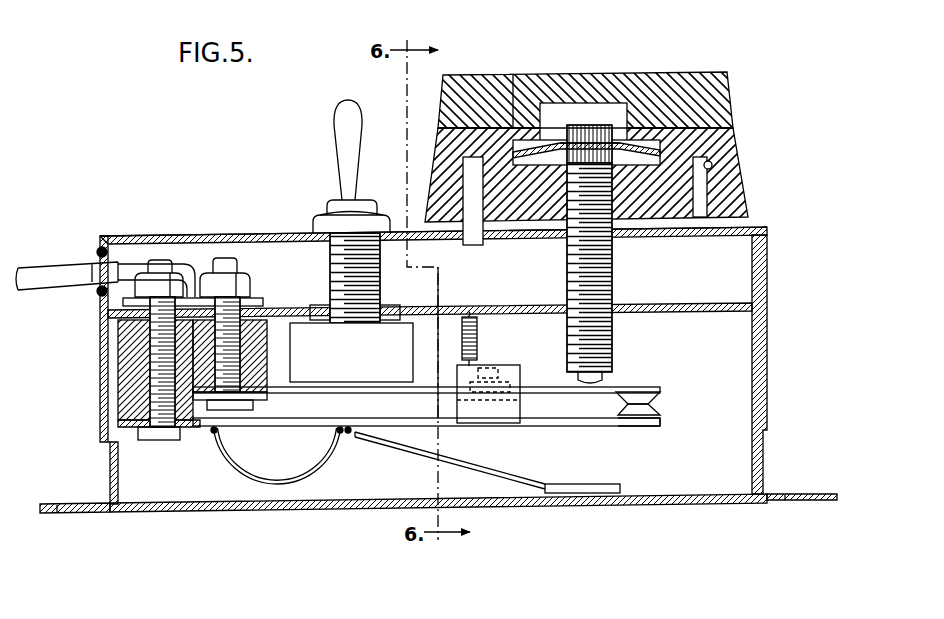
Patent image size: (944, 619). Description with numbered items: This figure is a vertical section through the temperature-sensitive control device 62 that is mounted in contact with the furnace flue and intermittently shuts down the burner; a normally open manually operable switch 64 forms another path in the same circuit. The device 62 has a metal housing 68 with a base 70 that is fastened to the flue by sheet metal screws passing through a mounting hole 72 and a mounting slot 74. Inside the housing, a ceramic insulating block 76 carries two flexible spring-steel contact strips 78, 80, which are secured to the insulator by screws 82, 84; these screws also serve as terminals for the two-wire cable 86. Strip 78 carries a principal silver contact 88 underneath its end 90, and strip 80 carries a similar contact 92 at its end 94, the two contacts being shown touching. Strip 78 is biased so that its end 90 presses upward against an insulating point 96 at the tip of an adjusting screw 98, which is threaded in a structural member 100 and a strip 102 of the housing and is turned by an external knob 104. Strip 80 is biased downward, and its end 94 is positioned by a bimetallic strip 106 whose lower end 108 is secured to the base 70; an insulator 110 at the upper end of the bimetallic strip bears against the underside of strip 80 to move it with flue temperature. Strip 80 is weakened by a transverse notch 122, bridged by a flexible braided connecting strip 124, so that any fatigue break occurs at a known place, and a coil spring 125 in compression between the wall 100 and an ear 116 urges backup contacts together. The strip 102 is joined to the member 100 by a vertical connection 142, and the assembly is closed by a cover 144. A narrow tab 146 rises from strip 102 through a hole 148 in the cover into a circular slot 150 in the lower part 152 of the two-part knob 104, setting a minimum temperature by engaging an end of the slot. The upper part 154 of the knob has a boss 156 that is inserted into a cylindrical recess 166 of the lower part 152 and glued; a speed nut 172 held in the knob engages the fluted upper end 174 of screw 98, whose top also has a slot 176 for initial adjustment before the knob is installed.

The temperature-sensitive control device 62 is at (168, 232).
The manually operable switch 64 is at (351, 241).
The metal housing 68 is at (765, 450).
The base 70 is at (677, 504).
The mounting hole 72 is at (85, 504).
The mounting slot 74 is at (805, 494).
The ceramic insulating block 76 is at (132, 361).
The contact strip 78 is at (410, 394).
The contact strip 80 is at (450, 420).
The screw 82 is at (232, 410).
The screw 84 is at (160, 442).
The two-wire cable 86 is at (55, 272).
The principal contact 88 is at (654, 398).
The end of strip 78 90 is at (633, 390).
The contact 92 is at (666, 408).
The end of strip 80 94 is at (652, 427).
The insulating point 96 is at (578, 380).
The adjusting screw 98 is at (612, 282).
The structural member 100 is at (447, 307).
The strip 102 is at (538, 250).
The adjusting knob 104 is at (623, 124).
The bimetallic strip 106 is at (510, 474).
The lower end of bimetallic strip 108 is at (590, 485).
The insulator 110 is at (372, 432).
The ear 116 is at (505, 407).
The transverse notch 122 is at (262, 420).
The flexible connecting strip 124 is at (318, 462).
The spring 125 is at (478, 346).
The vertical connection 142 is at (752, 284).
The cover 144 is at (770, 256).
The tab 146 is at (418, 187).
The hole 148 is at (463, 240).
The circular slot 150 is at (737, 155).
The lower part of knob 152 is at (743, 183).
The upper part of knob 154 is at (733, 97).
The boss 156 is at (683, 130).
The cylindrical recess 166 is at (497, 140).
The speed nut 172 is at (550, 143).
The fluted upper end 174 is at (607, 143).
The slot 176 is at (580, 123).